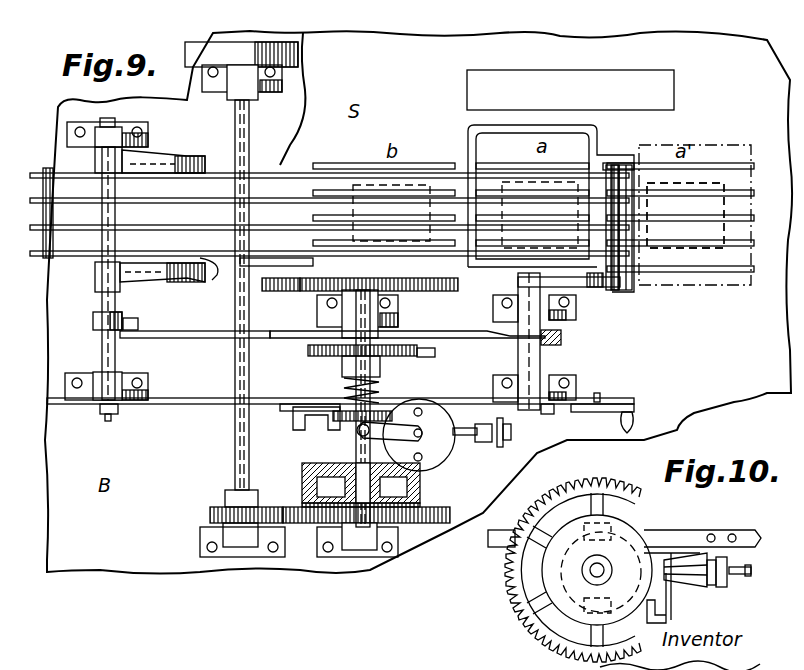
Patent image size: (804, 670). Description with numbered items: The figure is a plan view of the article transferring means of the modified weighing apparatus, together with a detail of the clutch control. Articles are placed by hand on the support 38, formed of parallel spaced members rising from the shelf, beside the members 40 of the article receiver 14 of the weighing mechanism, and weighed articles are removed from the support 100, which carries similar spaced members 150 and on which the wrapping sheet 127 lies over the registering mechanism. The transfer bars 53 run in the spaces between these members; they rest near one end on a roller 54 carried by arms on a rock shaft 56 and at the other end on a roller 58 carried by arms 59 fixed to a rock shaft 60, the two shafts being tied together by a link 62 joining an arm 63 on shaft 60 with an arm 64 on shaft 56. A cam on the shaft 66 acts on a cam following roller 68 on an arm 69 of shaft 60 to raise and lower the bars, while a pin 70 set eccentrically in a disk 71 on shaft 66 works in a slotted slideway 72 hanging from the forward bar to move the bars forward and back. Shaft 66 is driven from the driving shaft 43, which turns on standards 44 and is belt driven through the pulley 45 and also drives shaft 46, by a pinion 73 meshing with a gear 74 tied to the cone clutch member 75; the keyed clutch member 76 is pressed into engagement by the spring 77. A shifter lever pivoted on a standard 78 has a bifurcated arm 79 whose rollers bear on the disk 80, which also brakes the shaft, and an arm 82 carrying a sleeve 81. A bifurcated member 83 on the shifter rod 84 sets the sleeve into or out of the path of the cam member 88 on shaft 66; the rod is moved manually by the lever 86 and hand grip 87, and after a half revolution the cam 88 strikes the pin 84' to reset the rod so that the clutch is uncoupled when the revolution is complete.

In FIG. 9, the article receiver 14 is at (575, 158).
In FIG. 9, the article support 38 is at (335, 190).
In FIG. 9, the members of the article receiver 40 is at (490, 190).
In FIG. 9, the shaft 43 is at (235, 462).
In FIG. 9, the standards 44 is at (268, 92).
In FIG. 9, the pulley 45 is at (192, 52).
In FIG. 9, the shaft 46 is at (228, 550).
In FIG. 9, the transfer bars 53 is at (127, 250).
In FIG. 9, the roller 54 is at (216, 278).
In FIG. 9, the rock shaft 56 is at (102, 348).
In FIG. 9, the roller 58 is at (628, 170).
In FIG. 9, the arms 59 is at (580, 287).
In FIG. 9, the rock shaft 60 is at (518, 363).
In FIG. 9, the link 62 is at (212, 339).
In FIG. 9, the arm 63 is at (561, 338).
In FIG. 9, the arm 64 is at (138, 324).
In FIG. 9, the shaft 66 is at (356, 454).
In FIG. 10, the shaft 66 is at (593, 574).
In FIG. 9, the cam following roller 68 is at (425, 357).
In FIG. 9, the arm 69 is at (470, 339).
In FIG. 9, the pin 70 is at (278, 291).
In FIG. 9, the disk 71 is at (410, 279).
In FIG. 9, the slideway 72 is at (310, 263).
In FIG. 9, the pinion 73 is at (210, 513).
In FIG. 9, the gear 74 is at (307, 523).
In FIG. 10, the gear 74 is at (528, 630).
In FIG. 9, the clutch member 75 is at (302, 502).
In FIG. 9, the clutch member 76 is at (302, 471).
In FIG. 9, the spring 77 is at (344, 384).
In FIG. 9, the standard 78 is at (432, 455).
In FIG. 10, the standard 78 is at (649, 625).
In FIG. 9, the arm of the shifter lever 79 is at (440, 450).
In FIG. 10, the arm of the shifter lever 79 is at (604, 570).
In FIG. 9, the disk 80 is at (348, 421).
In FIG. 10, the disk 80 is at (542, 572).
In FIG. 9, the sleeve 81 is at (503, 440).
In FIG. 10, the sleeve 81 is at (718, 585).
In FIG. 9, the arm of the shifter lever 82 is at (482, 442).
In FIG. 10, the arm of the shifter lever 82 is at (750, 574).
In FIG. 9, the bifurcated member 83 is at (511, 430).
In FIG. 10, the bifurcated member 83 is at (723, 557).
In FIG. 9, the shifter rod 84 is at (340, 420).
In FIG. 10, the shifter rod 84 is at (702, 527).
In FIG. 9, the pin 84' is at (296, 389).
In FIG. 10, the pin 84' is at (581, 556).
In FIG. 9, the lever 86 is at (590, 412).
In FIG. 9, the hand grip 87 is at (634, 404).
In FIG. 9, the cam member 88 is at (300, 428).
In FIG. 10, the cam member 88 is at (690, 555).
In FIG. 9, the support 100 is at (688, 261).
In FIG. 9, the wrapping sheet 127 is at (710, 145).
In FIG. 9, the members 150 is at (716, 246).